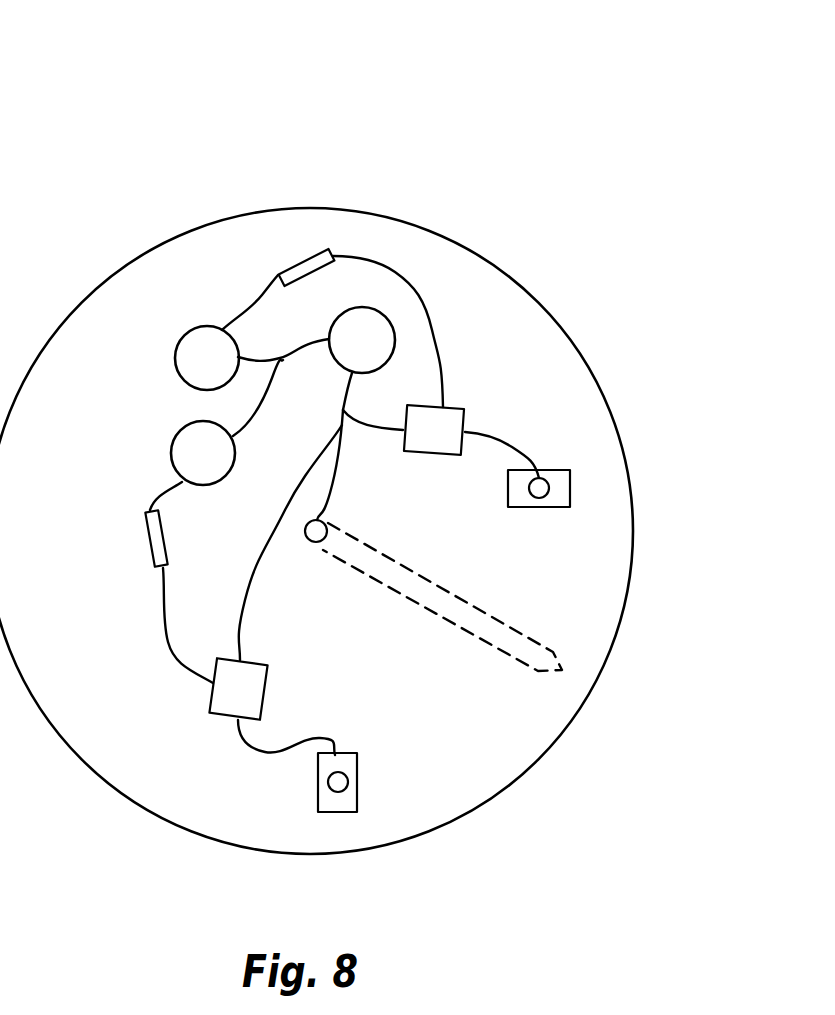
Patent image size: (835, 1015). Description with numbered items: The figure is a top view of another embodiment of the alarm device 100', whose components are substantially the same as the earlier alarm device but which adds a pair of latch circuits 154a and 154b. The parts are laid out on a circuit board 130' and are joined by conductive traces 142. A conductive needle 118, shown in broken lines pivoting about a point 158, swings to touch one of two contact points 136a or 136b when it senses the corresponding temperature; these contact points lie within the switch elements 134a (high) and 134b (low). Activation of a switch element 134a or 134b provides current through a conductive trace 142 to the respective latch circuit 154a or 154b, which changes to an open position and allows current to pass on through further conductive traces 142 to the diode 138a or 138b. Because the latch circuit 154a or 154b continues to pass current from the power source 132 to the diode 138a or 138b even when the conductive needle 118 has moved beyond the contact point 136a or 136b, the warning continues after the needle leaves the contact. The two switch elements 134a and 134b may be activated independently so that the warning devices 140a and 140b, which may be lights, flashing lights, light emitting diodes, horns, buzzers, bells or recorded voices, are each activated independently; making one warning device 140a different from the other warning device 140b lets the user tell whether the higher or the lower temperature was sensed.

The alarm device 100' is at (147, 100).
The circuit board 130' is at (321, 531).
The power source 132 is at (362, 308).
The switch element 134a is at (345, 813).
The switch element 134b is at (570, 486).
The contact point 136a is at (349, 782).
The contact point 136b is at (539, 498).
The diode 138a is at (145, 543).
The diode 138b is at (300, 258).
The warning device 140a is at (171, 463).
The warning device 140b is at (176, 358).
The conductive trace 142 is at (460, 297).
The latch circuit 154a is at (210, 698).
The latch circuit 154b is at (457, 403).
The pivot 158 is at (268, 532).
The conductive needle 118 is at (460, 630).